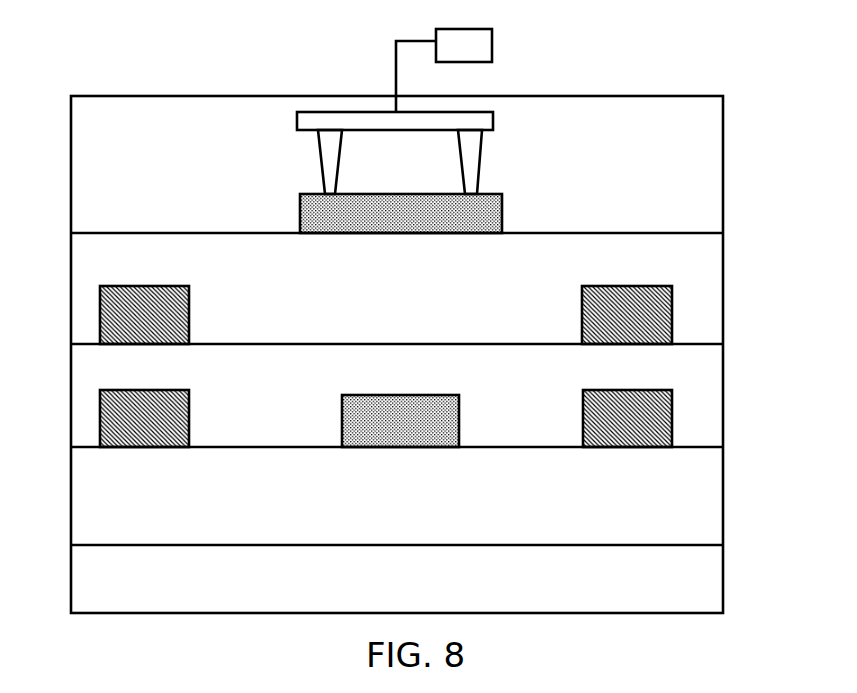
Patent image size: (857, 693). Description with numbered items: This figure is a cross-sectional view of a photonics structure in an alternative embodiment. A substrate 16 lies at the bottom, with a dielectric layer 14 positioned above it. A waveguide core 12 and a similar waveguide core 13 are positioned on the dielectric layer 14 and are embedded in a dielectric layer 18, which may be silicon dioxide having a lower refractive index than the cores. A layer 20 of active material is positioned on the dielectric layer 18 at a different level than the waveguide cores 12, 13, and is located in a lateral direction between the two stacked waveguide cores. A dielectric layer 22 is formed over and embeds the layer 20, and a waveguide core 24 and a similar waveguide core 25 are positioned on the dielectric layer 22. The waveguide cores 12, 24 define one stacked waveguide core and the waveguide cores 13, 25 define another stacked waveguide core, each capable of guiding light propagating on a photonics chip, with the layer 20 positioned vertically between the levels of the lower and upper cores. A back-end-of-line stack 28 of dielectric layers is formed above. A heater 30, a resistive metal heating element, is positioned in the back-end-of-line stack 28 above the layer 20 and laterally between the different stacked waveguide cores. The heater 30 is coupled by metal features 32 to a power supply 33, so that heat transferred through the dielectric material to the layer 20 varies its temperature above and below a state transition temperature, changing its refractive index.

The waveguide core 12 is at (128, 406).
The waveguide core 13 is at (613, 406).
The dielectric layer 14 is at (683, 508).
The substrate 16 is at (683, 577).
The dielectric layer 18 is at (683, 366).
The layer 20 is at (368, 427).
The dielectric layer 22 is at (683, 265).
The waveguide core 24 is at (128, 303).
The waveguide core 25 is at (613, 303).
The back-end-of-line stack 28 is at (698, 172).
The heater 30 is at (473, 218).
The metal features 32 is at (472, 162).
The power supply 33 is at (465, 49).